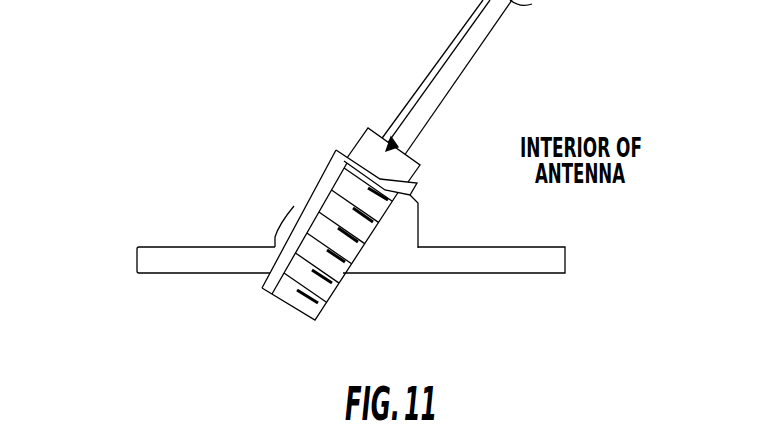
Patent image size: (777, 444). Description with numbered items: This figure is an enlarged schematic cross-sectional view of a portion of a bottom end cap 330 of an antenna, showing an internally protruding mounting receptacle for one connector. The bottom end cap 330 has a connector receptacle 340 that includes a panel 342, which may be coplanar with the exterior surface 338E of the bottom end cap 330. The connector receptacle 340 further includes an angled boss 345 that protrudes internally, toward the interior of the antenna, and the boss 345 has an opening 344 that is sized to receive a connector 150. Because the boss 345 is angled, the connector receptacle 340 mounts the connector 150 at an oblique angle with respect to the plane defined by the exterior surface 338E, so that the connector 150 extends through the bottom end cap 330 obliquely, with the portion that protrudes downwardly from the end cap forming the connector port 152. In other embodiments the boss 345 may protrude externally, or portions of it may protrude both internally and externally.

The connector 150 is at (375, 93).
The connector port 152 is at (288, 302).
The bottom end cap 330 is at (136, 252).
The exterior surface 338E is at (524, 276).
The connector receptacle 340 is at (259, 144).
The panel 342 is at (398, 275).
The opening 344 is at (394, 144).
The angled boss 345 is at (293, 206).